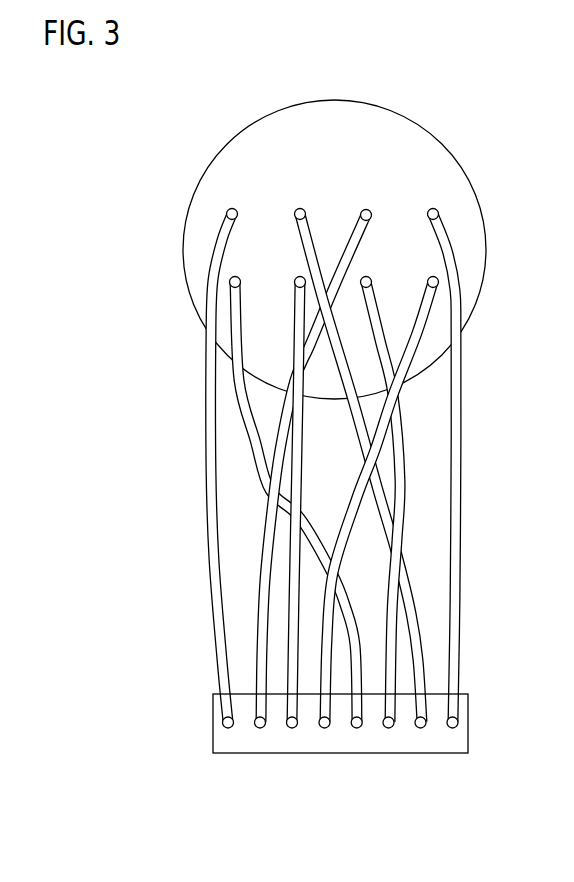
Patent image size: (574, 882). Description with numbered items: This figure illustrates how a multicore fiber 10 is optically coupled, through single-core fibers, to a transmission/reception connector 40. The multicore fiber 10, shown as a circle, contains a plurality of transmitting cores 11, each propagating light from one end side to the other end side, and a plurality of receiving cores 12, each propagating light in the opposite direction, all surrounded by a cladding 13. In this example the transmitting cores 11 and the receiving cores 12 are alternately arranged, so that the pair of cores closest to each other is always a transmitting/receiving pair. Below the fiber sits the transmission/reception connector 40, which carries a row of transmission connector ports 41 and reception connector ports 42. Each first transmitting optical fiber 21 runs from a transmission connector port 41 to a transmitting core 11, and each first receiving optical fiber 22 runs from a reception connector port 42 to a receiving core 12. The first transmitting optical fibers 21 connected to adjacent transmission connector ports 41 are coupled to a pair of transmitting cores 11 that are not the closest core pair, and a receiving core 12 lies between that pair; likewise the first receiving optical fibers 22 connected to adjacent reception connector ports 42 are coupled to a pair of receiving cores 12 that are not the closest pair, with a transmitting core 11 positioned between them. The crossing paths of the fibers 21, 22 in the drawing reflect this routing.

The multicore fiber 10 is at (380, 102).
The transmitting core 11 is at (232, 208).
The receiving core 12 is at (299, 276).
The cladding 13 is at (194, 249).
The first transmitting optical fiber 21 is at (213, 498).
The first receiving optical fiber 22 is at (463, 428).
The transmission/reception connector 40 is at (462, 745).
The transmission connector port 41 is at (227, 728).
The reception connector port 42 is at (357, 728).